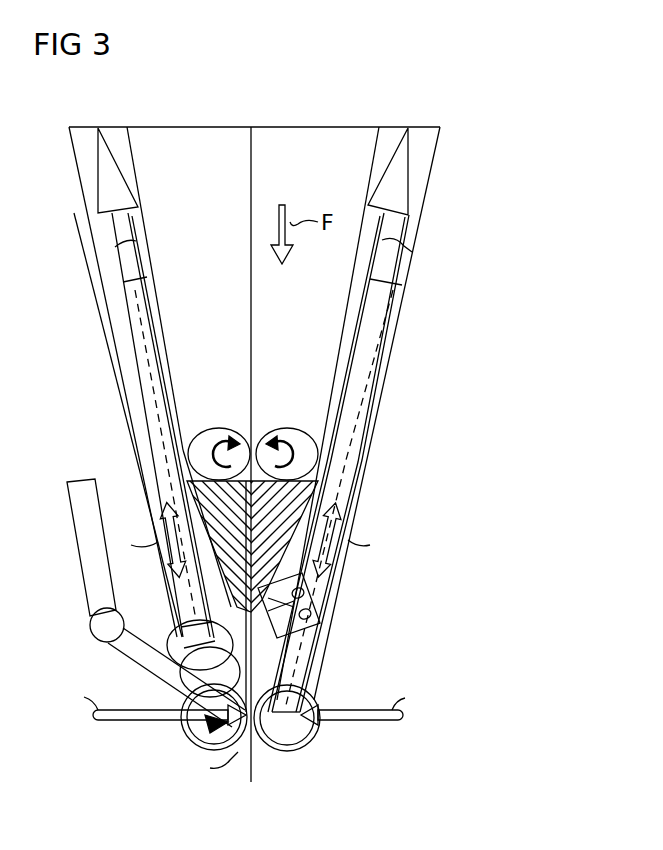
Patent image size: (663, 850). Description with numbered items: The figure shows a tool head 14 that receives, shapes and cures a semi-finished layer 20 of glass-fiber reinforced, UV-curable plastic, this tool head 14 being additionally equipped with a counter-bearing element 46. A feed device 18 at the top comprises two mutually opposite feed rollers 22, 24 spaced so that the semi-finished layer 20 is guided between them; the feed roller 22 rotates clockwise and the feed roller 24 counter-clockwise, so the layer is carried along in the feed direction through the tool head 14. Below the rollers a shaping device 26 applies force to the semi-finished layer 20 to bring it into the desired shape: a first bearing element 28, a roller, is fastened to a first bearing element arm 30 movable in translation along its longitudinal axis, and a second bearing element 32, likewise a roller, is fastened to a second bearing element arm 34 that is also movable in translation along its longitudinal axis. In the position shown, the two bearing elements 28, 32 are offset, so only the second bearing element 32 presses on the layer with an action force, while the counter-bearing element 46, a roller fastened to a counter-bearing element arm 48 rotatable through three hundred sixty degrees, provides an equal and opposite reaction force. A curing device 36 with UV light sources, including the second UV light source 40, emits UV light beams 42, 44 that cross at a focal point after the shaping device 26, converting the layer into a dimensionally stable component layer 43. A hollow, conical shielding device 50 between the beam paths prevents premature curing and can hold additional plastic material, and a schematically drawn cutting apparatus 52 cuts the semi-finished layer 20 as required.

The tool head 14 is at (458, 222).
The feed device 18 is at (276, 372).
The semi-finished layer 20 is at (251, 280).
The feed roller 22 is at (212, 430).
The feed roller 24 is at (288, 432).
The shaping device 26 is at (392, 652).
The first bearing element 28 is at (172, 643).
The first bearing element arm 30 is at (130, 382).
The second bearing element 32 is at (314, 746).
The second bearing element arm 34 is at (370, 404).
The curing device 36 is at (476, 176).
The second UV light source 40 is at (100, 167).
The UV light beam 42 is at (115, 247).
The component layer 43 is at (254, 766).
The UV light beam 44 is at (412, 252).
The counter-bearing element 46 is at (186, 733).
The counter-bearing element arm 48 is at (88, 548).
The shielding device 50 is at (316, 512).
The cutting apparatus 52 is at (321, 612).